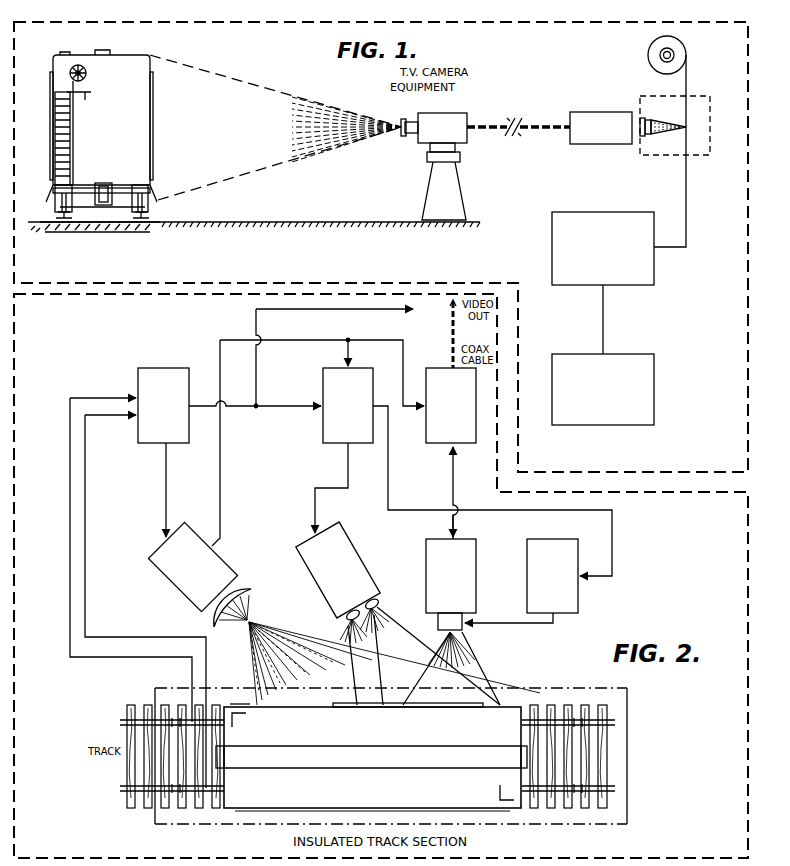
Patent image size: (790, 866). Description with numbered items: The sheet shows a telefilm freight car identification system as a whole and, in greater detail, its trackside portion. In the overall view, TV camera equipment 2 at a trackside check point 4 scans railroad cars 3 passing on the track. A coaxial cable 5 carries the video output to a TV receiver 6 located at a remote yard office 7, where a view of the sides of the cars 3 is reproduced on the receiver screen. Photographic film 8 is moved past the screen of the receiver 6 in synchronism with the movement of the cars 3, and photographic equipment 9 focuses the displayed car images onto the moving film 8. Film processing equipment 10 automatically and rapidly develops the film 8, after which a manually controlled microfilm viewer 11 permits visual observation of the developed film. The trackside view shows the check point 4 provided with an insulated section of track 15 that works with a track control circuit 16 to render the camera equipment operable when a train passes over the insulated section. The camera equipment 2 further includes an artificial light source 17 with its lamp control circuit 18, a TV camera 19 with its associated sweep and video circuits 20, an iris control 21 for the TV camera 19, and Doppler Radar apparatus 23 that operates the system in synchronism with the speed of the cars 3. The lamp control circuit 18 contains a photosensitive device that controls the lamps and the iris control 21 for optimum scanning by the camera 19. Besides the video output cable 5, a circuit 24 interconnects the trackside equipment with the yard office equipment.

In FIG. 1, the TV camera equipment 2 is at (424, 177).
In FIG. 2, the TV camera equipment 2 is at (63, 377).
In FIG. 1, the railroad car 3 is at (138, 55).
In FIG. 2, the railroad car 3 is at (245, 812).
In FIG. 1, the trackside check point 4 is at (316, 80).
In FIG. 1, the cable 5 is at (490, 125).
In FIG. 2, the cable 5 is at (455, 348).
In FIG. 1, the TV receiver 6 is at (603, 112).
In FIG. 1, the remote yard office 7 is at (593, 66).
In FIG. 1, the photographic film 8 is at (688, 87).
In FIG. 1, the photographic equipment 9 is at (645, 156).
In FIG. 1, the film processing equipment 10 is at (655, 272).
In FIG. 1, the microfilm viewer 11 is at (654, 397).
In FIG. 2, the insulated section of track 15 is at (590, 705).
In FIG. 2, the track control circuit 16 is at (138, 368).
In FIG. 2, the artificial light source 17 is at (310, 539).
In FIG. 2, the lamp control circuit 18 is at (323, 413).
In FIG. 2, the TV camera 19 is at (478, 545).
In FIG. 2, the sweep and video circuits 20 is at (443, 443).
In FIG. 2, the iris control 21 is at (578, 592).
In FIG. 2, the Doppler Radar apparatus 23 is at (148, 557).
In FIG. 2, the circuit 24 is at (375, 309).